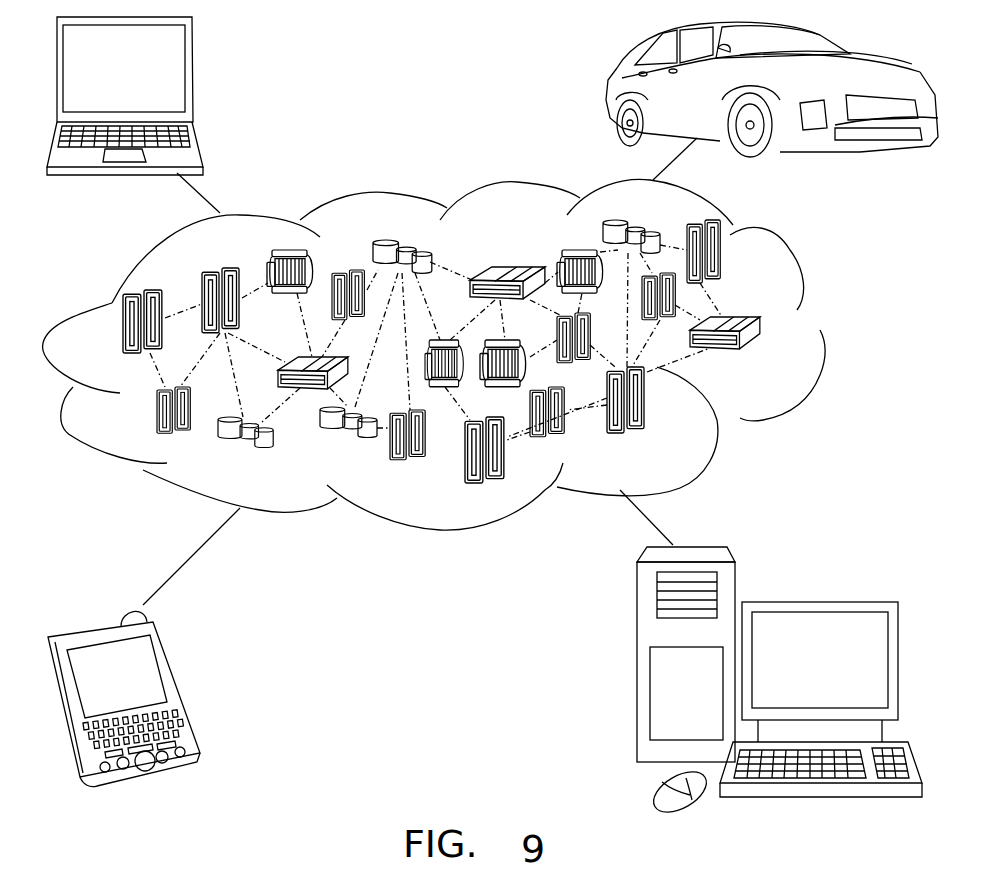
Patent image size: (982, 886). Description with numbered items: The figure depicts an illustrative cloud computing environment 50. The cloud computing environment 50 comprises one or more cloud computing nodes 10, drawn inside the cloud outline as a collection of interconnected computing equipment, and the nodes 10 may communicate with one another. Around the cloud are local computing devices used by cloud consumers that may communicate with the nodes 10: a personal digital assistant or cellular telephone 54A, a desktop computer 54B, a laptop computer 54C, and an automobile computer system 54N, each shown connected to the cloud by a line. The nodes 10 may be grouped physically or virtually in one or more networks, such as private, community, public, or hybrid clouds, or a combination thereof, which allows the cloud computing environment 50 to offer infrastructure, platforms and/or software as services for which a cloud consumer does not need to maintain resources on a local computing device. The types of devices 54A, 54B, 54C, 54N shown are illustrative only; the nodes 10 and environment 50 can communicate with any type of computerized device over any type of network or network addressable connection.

The cloud computing node 10 is at (770, 358).
The cloud computing environment 50 is at (817, 330).
The personal digital assistant or cellular telephone 54A is at (177, 687).
The desktop computer 54B is at (817, 598).
The laptop computer 54C is at (192, 75).
The automobile computer system 54N is at (608, 90).